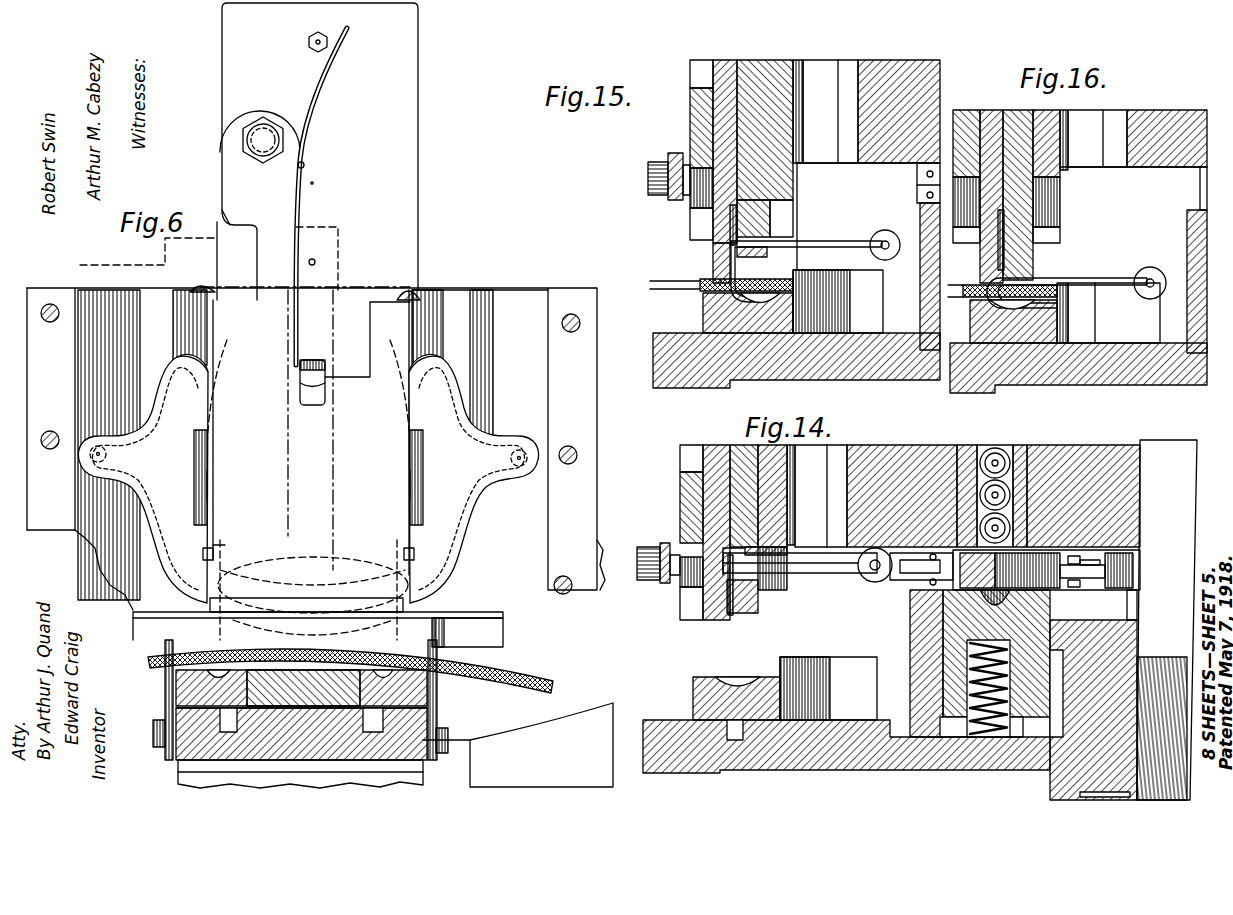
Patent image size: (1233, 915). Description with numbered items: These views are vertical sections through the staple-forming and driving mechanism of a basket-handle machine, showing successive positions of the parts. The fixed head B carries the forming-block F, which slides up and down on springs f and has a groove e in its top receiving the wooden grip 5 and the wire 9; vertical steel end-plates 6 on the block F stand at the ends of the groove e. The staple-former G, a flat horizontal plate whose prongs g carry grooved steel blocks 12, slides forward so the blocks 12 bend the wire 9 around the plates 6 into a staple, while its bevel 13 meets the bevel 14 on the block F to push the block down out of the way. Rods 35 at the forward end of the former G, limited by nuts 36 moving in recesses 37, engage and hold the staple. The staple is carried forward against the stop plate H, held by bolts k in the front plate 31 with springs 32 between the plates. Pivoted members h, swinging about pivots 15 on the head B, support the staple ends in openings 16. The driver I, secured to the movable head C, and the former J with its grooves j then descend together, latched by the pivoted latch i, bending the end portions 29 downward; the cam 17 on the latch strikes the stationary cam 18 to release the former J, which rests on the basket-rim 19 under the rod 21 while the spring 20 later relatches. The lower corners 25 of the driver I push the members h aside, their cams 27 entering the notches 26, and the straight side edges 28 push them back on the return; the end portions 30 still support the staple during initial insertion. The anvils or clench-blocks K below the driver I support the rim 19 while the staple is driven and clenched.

In FIG. 15, the wooden grip 5 is at (885, 232).
In FIG. 16, the wooden grip 5 is at (1150, 270).
In FIG. 14, the wooden grip 5 is at (977, 465).
In FIG. 14, the end-plates 6 is at (930, 598).
In FIG. 15, the wire 9 is at (832, 241).
In FIG. 14, the wire 9 is at (805, 573).
In FIG. 15, the grooved steel blocks 12 is at (917, 172).
In FIG. 16, the grooved steel blocks 12 is at (1200, 175).
In FIG. 14, the grooved steel blocks 12 is at (895, 588).
In FIG. 14, the bevel 13 is at (925, 612).
In FIG. 14, the bevel 14 is at (1014, 572).
In FIG. 6, the pivot 15 is at (103, 446).
In FIG. 6, the supporting openings 16 is at (313, 578).
In FIG. 14, the supporting openings 16 is at (790, 540).
In FIG. 6, the cam 17 is at (232, 255).
In FIG. 6, the stationary cam 18 is at (165, 250).
In FIG. 6, the basket-rim 19 is at (545, 680).
In FIG. 15, the basket-rim 19 is at (700, 281).
In FIG. 6, the spring 20 is at (316, 100).
In FIG. 6, the rod 21 is at (328, 372).
In FIG. 6, the lower corners 25 is at (222, 545).
In FIG. 6, the notches 26 is at (205, 290).
In FIG. 6, the cams 27 is at (178, 368).
In FIG. 6, the straight side edges 28 is at (212, 486).
In FIG. 6, the end portions 29 is at (215, 535).
In FIG. 15, the end portions 29 is at (771, 269).
In FIG. 14, the end portions 29 is at (723, 620).
In FIG. 6, the end portions 30 is at (313, 631).
In FIG. 15, the end portions 30 is at (768, 253).
In FIG. 15, the front plate 31 is at (690, 132).
In FIG. 15, the springs 32 is at (655, 160).
In FIG. 14, the springs 32 is at (668, 538).
In FIG. 14, the rods 35 is at (1140, 523).
In FIG. 14, the nuts 36 is at (1137, 612).
In FIG. 14, the recesses 37 is at (1130, 588).
In FIG. 6, the fixed head B is at (497, 298).
In FIG. 15, the fixed head B is at (890, 60).
In FIG. 16, the fixed head B is at (1158, 112).
In FIG. 14, the fixed head B is at (1060, 457).
In FIG. 14, the movable head C is at (1147, 443).
In FIG. 14, the forming-block F is at (925, 628).
In FIG. 14, the staple-former G is at (1135, 572).
In FIG. 6, the plate H is at (612, 530).
In FIG. 15, the plate H is at (690, 212).
In FIG. 14, the plate H is at (640, 540).
In FIG. 6, the driver I is at (405, 183).
In FIG. 15, the driver I is at (797, 197).
In FIG. 16, the driver I is at (1020, 205).
In FIG. 14, the driver I is at (740, 485).
In FIG. 6, the former J is at (306, 514).
In FIG. 15, the former J is at (728, 218).
In FIG. 16, the former J is at (980, 258).
In FIG. 14, the former J is at (715, 508).
In FIG. 6, the anvils or clench-blocks K is at (177, 693).
In FIG. 15, the anvils or clench-blocks K is at (705, 318).
In FIG. 16, the anvils or clench-blocks K is at (975, 325).
In FIG. 14, the anvils or clench-blocks K is at (700, 692).
In FIG. 14, the groove e is at (912, 626).
In FIG. 14, the springs f is at (922, 700).
In FIG. 14, the prongs g is at (870, 580).
In FIG. 6, the pivoted members h is at (308, 479).
In FIG. 14, the pivoted members h is at (760, 600).
In FIG. 6, the pivoted latch i is at (275, 197).
In FIG. 15, the grooves j is at (713, 240).
In FIG. 16, the grooves j is at (985, 275).
In FIG. 14, the grooves j is at (700, 580).
In FIG. 15, the bolts k is at (648, 178).
In FIG. 14, the bolts k is at (650, 556).